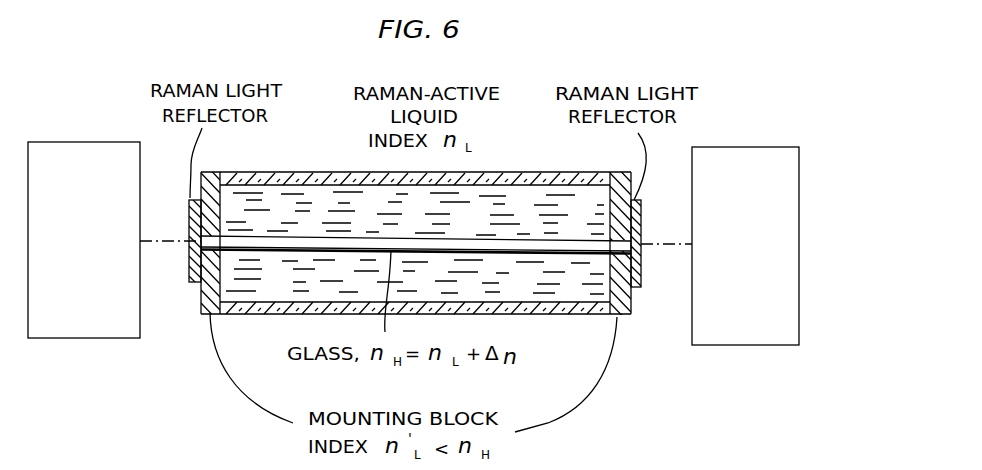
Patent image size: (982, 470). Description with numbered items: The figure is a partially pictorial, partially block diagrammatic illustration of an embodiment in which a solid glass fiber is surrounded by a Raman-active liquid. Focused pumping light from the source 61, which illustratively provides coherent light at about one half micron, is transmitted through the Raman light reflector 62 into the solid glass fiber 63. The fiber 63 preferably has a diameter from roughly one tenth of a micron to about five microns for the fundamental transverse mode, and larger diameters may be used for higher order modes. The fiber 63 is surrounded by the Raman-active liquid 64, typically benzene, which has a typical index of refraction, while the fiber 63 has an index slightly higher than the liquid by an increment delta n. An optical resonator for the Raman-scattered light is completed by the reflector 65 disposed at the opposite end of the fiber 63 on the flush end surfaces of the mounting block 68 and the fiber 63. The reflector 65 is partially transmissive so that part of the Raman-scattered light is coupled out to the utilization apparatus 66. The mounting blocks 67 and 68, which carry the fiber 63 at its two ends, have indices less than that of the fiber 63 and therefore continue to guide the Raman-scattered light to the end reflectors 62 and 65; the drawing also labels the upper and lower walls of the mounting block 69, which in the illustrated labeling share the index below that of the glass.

The pumping light source 61 is at (82, 338).
The Raman light reflector 62 is at (192, 290).
The solid glass fiber 63 is at (473, 240).
The Raman-active liquid 64 is at (395, 202).
The reflector 65 is at (637, 290).
The utilization apparatus 66 is at (739, 345).
The mounting block 67 is at (203, 314).
The mounting block 68 is at (624, 318).
The mounting block walls 69 is at (526, 176).